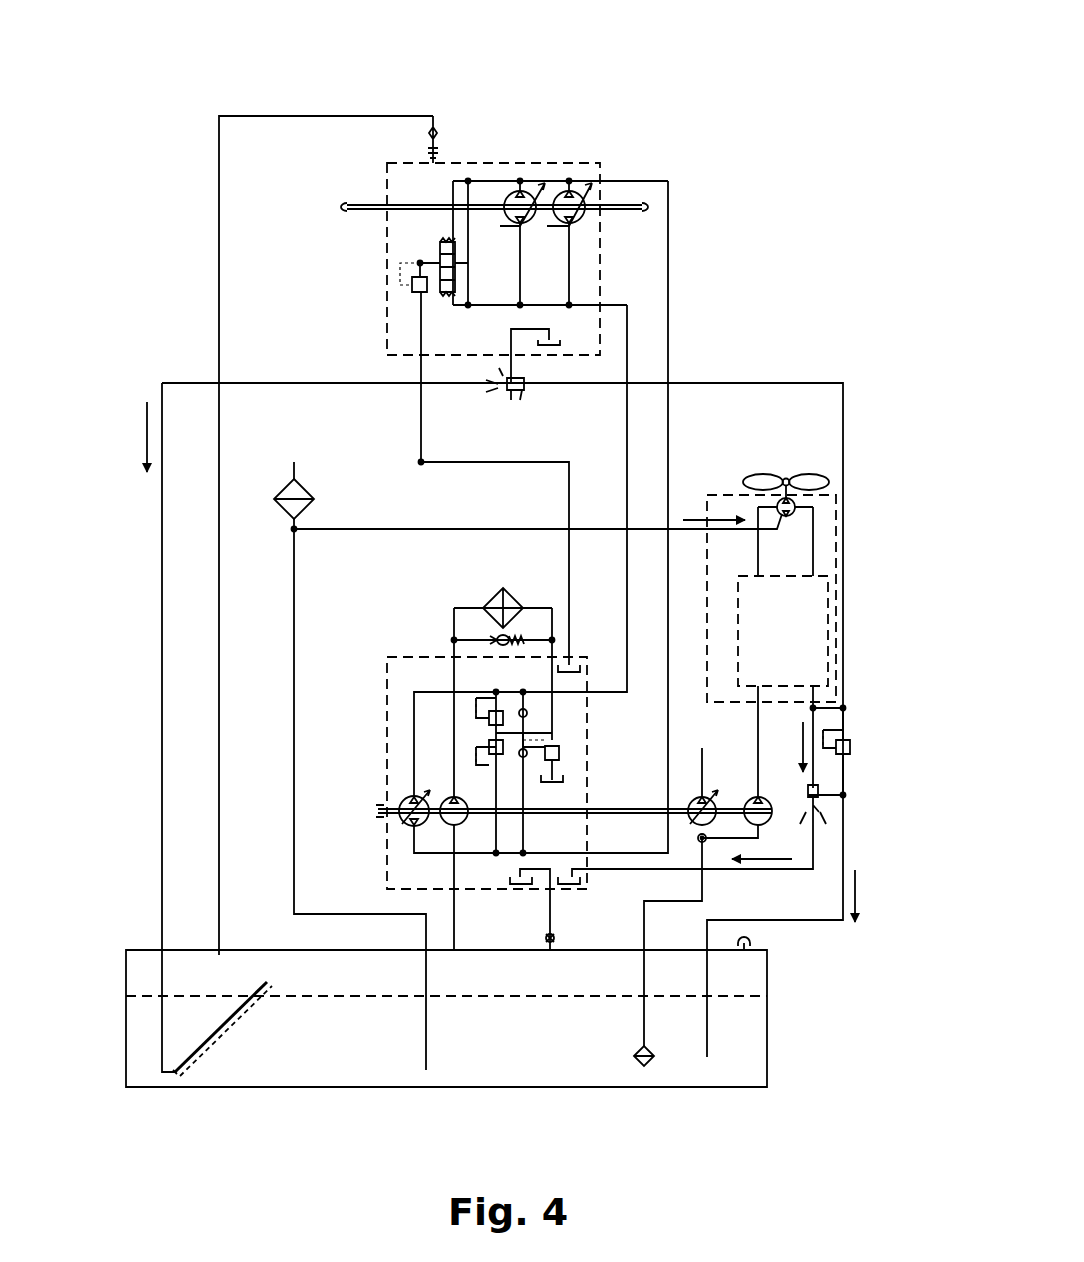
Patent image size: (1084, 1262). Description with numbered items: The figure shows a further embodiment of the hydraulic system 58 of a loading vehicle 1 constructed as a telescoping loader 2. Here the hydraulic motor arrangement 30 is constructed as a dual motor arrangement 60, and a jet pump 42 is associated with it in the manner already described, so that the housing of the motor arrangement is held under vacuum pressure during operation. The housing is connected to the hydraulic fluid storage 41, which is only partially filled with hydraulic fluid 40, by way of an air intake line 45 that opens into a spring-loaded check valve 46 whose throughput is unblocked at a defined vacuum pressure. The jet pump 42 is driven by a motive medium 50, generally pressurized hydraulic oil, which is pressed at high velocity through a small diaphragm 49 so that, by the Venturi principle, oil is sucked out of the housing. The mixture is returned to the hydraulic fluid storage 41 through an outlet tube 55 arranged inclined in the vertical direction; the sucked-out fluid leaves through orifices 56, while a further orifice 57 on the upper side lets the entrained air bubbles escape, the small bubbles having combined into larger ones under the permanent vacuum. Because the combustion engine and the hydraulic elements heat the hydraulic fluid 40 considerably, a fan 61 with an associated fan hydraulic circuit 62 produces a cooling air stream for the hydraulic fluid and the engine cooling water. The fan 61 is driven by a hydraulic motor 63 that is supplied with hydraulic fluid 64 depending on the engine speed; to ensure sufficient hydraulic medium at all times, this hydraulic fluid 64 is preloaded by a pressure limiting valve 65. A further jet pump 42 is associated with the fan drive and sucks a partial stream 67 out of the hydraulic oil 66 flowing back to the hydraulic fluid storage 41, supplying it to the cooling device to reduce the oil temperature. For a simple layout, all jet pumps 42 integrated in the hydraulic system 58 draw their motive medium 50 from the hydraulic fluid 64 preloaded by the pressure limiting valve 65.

The loading vehicle 1 is at (791, 202).
The telescoping loader 2 is at (791, 202).
The hydraulic motor arrangement 30 is at (530, 231).
The dual motor arrangement 60 is at (582, 158).
The hydraulic fluid 40 is at (497, 1018).
The hydraulic fluid storage 41 is at (822, 1037).
The jet pump 42 is at (535, 378).
The air intake line 45 is at (283, 116).
The check valve 46 is at (440, 145).
The diaphragm 49 is at (683, 580).
The motive medium 50 is at (683, 580).
The outlet tube 55 is at (213, 1027).
The orifices 56 is at (213, 1027).
The further orifice 57 is at (205, 1037).
The hydraulic system 58 is at (253, 365).
The fan 61 is at (812, 483).
The fan hydraulic circuit 62 is at (820, 622).
The hydraulic motor 63 is at (797, 503).
The hydraulic fluid 64 is at (811, 563).
The pressure limiting valve 65 is at (716, 632).
The hydraulic oil 66 is at (146, 428).
The partial stream 67 is at (772, 860).